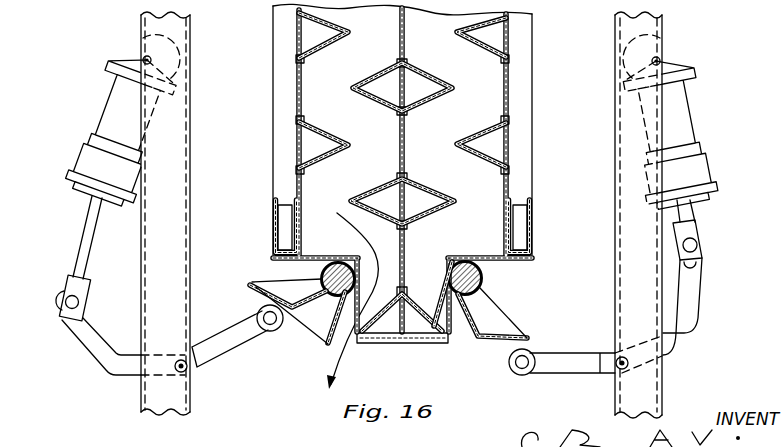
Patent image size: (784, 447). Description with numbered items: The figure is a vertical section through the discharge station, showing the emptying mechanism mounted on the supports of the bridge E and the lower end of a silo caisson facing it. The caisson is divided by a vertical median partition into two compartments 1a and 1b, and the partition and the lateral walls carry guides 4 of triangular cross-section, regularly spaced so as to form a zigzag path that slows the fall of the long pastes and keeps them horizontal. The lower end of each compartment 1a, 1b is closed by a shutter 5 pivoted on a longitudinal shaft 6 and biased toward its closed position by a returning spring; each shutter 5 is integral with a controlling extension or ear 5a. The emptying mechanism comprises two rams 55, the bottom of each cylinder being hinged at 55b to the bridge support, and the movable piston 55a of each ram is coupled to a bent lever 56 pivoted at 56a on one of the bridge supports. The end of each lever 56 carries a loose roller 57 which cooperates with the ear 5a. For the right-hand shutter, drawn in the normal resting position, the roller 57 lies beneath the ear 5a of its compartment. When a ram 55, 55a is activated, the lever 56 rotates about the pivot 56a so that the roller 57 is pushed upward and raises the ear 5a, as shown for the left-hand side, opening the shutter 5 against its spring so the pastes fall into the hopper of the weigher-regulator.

The compartment 1a is at (475, 82).
The compartment 1b is at (322, 107).
The guides 4 is at (360, 86).
The shutter 5 is at (325, 318).
The controlling extension or ear 5a is at (290, 282).
The longitudinal shaft 6 is at (338, 261).
The ram 55 is at (118, 100).
The movable piston 55a is at (90, 226).
The hinge 55b is at (146, 58).
The bent lever 56 is at (101, 349).
The pivot 56a is at (187, 369).
The loose roller 57 is at (258, 310).
The bridge E is at (220, 118).